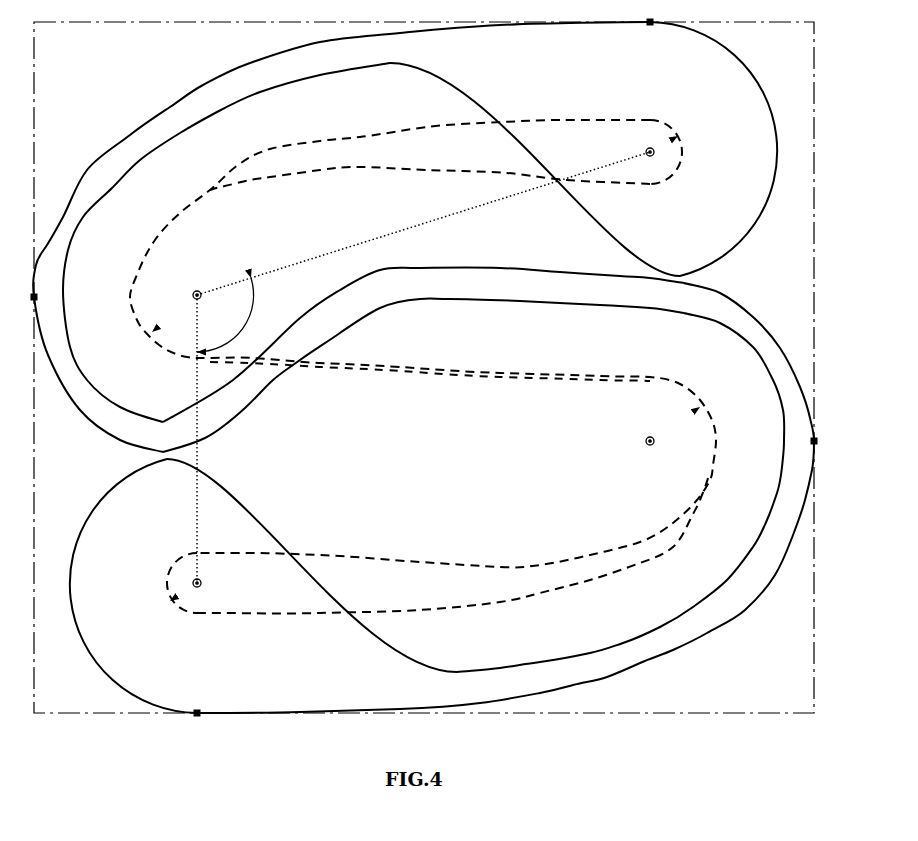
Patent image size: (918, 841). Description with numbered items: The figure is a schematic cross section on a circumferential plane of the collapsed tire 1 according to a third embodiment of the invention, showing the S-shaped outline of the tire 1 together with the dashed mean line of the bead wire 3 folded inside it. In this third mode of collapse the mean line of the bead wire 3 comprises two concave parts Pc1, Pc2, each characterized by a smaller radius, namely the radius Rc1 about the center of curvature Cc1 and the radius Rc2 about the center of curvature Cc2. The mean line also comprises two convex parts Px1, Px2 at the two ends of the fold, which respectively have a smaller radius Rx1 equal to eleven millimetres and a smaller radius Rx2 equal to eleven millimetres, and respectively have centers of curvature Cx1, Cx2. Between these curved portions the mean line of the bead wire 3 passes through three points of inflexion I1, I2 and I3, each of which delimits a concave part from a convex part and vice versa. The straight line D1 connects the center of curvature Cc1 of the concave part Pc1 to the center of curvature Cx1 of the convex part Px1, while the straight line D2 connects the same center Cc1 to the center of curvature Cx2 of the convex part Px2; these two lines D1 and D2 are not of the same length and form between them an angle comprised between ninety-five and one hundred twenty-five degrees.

The tire 1 is at (708, 633).
The bead wire 3 is at (562, 588).
The concave part Pc1 is at (152, 238).
The center of curvature of the concave part Cc1 is at (197, 291).
The radius of the concave part Rc1 is at (175, 312).
The straight line D1 is at (371, 243).
The convex part Px1 is at (636, 118).
The radius of the convex part Rx1 is at (664, 143).
The center of curvature of the convex part Cx1 is at (655, 157).
The point of inflexion I1 is at (432, 172).
The point of inflexion I2 is at (535, 377).
The radius of the concave part Rc2 is at (667, 423).
The center of curvature of the concave part Cc2 is at (648, 444).
The concave part Pc2 is at (719, 443).
The point of inflexion I3 is at (420, 563).
The straight line D2 is at (199, 458).
The convex part Px2 is at (177, 557).
The radius of the convex part Rx2 is at (173, 598).
The center of curvature of the convex part Cx2 is at (200, 588).